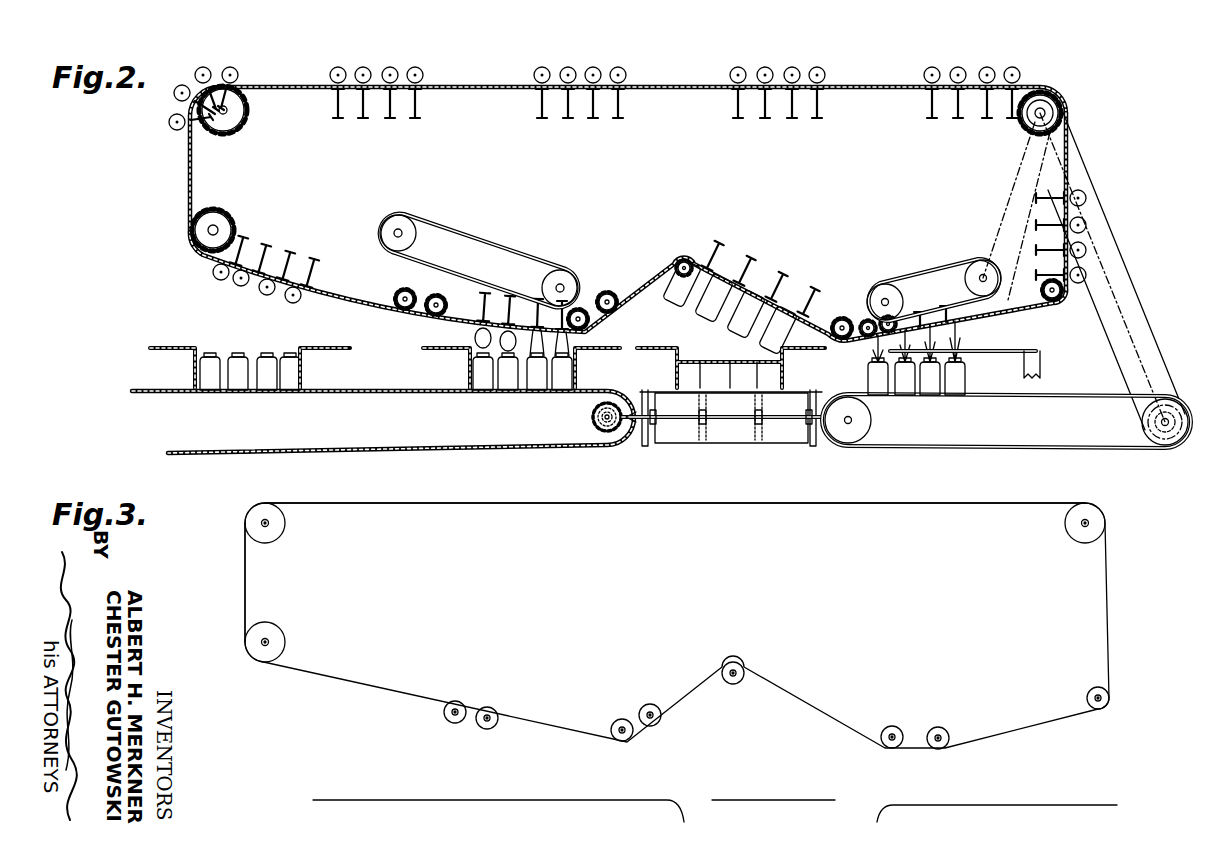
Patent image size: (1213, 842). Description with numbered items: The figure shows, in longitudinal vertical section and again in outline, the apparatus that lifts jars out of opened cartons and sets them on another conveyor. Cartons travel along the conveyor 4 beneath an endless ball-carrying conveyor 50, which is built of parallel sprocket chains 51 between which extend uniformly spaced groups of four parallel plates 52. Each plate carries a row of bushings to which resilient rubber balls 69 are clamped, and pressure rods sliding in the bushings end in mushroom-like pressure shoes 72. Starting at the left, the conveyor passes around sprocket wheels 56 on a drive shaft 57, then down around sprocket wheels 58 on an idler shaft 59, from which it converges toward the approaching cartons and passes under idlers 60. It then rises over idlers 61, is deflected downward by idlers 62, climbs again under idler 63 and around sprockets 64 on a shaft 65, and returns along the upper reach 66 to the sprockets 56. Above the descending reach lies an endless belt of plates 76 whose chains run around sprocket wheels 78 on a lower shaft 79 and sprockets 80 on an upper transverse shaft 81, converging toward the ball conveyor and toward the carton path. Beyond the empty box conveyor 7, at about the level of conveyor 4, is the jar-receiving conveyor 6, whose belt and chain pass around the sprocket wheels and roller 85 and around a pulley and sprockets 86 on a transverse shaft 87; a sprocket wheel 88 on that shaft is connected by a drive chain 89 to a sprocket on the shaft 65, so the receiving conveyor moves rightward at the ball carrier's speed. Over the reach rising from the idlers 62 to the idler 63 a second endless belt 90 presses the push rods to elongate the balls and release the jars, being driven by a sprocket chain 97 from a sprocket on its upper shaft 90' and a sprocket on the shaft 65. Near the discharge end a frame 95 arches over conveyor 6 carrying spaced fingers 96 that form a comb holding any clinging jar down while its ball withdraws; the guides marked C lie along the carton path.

In FIG. 2, the conveyor 4 is at (375, 431).
In FIG. 3, the conveyor 4 is at (484, 797).
In FIG. 2, the jar-receiving conveyor 6 is at (968, 436).
In FIG. 3, the jar-receiving conveyor 6 is at (1012, 797).
In FIG. 2, the empty box conveyor 7 is at (655, 448).
In FIG. 3, the empty box conveyor 7 is at (769, 797).
In FIG. 2, the endless conveyor 50 is at (166, 162).
In FIG. 3, the endless conveyor 50 is at (228, 536).
In FIG. 2, the sprocket chains 51 is at (188, 192).
In FIG. 3, the sprocket chains 51 is at (243, 568).
In FIG. 2, the plates 52 is at (308, 286).
In FIG. 3, the plates 52 is at (677, 625).
In FIG. 2, the sprocket wheels 56 is at (238, 132).
In FIG. 3, the sprocket wheels 56 is at (285, 536).
In FIG. 2, the drive shaft 57 is at (228, 114).
In FIG. 3, the drive shaft 57 is at (270, 523).
In FIG. 2, the sprocket wheels 58 is at (226, 214).
In FIG. 3, the sprocket wheels 58 is at (282, 626).
In FIG. 2, the idler shaft 59 is at (220, 230).
In FIG. 3, the idler shaft 59 is at (272, 642).
In FIG. 2, the idlers 60 is at (410, 290).
In FIG. 3, the idlers 60 is at (490, 707).
In FIG. 2, the idlers 61 is at (684, 258).
In FIG. 3, the idlers 61 is at (737, 663).
In FIG. 2, the idlers 62 is at (845, 318).
In FIG. 3, the idlers 62 is at (938, 727).
In FIG. 2, the idler 63 is at (1052, 302).
In FIG. 3, the idler 63 is at (1090, 692).
In FIG. 2, the sprockets 64 is at (1040, 128).
In FIG. 3, the sprockets 64 is at (1092, 541).
In FIG. 2, the shaft 65 is at (1035, 120).
In FIG. 3, the shaft 65 is at (1080, 523).
In FIG. 2, the return upper reach 66 is at (668, 86).
In FIG. 3, the return upper reach 66 is at (784, 503).
In FIG. 2, the resilient rubber ball 69 is at (170, 120).
In FIG. 2, the pressure shoe 72 is at (292, 256).
In FIG. 2, the plates 76 is at (440, 222).
In FIG. 2, the sprocket wheels 78 is at (552, 286).
In FIG. 2, the lower shaft 79 is at (562, 282).
In FIG. 2, the sprockets 80 is at (412, 238).
In FIG. 2, the upper transverse shaft 81 is at (396, 230).
In FIG. 2, the sprocket wheels and roller 85 is at (874, 420).
In FIG. 2, the pulley and sprockets 86 is at (1146, 420).
In FIG. 2, the transverse shaft 87 is at (1160, 424).
In FIG. 2, the sprocket wheel 88 is at (1160, 446).
In FIG. 2, the drive chain 89 is at (1132, 288).
In FIG. 2, the second endless belt 90 is at (933, 276).
In FIG. 2, the shaft 90' is at (970, 256).
In FIG. 2, the frame 95 is at (1042, 368).
In FIG. 2, the fingers 96 is at (982, 350).
In FIG. 2, the sprocket chain 97 is at (990, 186).
In FIG. 2, the container guide C is at (172, 345).